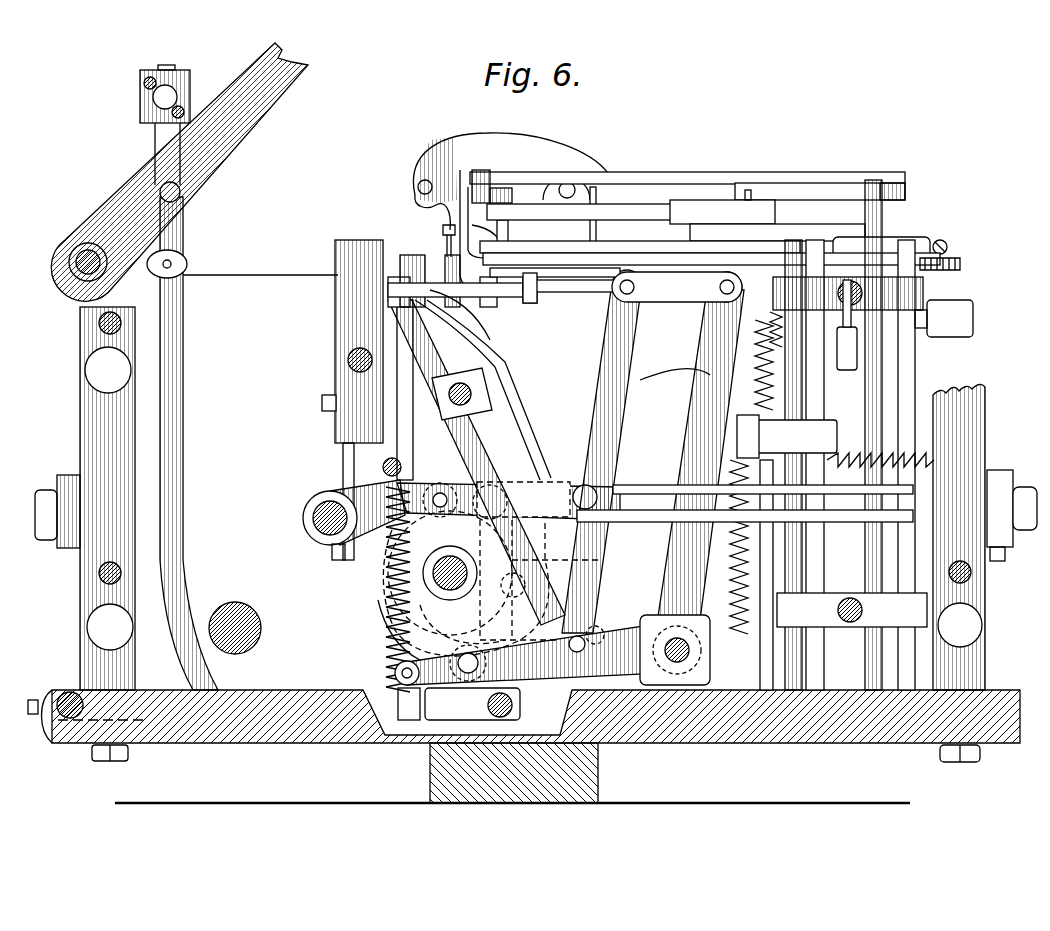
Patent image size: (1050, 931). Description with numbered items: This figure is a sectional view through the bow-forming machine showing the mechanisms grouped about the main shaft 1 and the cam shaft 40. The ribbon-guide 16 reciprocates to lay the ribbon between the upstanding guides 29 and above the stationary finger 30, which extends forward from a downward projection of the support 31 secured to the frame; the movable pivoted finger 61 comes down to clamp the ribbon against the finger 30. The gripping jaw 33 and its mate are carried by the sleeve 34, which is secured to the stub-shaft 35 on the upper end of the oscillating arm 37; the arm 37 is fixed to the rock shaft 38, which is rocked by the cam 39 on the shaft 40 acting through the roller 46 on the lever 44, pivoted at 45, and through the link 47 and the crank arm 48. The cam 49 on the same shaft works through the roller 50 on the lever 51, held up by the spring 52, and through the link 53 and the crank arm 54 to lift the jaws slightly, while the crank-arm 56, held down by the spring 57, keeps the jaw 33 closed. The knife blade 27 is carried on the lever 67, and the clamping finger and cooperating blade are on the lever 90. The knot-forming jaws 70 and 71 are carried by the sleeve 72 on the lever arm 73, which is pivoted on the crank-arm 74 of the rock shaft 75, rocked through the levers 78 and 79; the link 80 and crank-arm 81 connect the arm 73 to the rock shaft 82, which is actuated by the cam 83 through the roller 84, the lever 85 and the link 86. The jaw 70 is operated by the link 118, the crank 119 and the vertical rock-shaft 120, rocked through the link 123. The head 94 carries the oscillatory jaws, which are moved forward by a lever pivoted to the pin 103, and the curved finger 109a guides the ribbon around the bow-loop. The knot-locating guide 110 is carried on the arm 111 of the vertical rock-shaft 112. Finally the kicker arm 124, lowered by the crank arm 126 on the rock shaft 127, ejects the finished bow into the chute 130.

The main shaft 1 is at (260, 615).
The ribbon-guide 16 is at (155, 143).
The knife blade 27 is at (930, 490).
The upstanding guides 29 is at (595, 187).
The stationary finger 30 is at (469, 319).
The support 31 is at (510, 150).
The gripping jaw 33 is at (535, 280).
The sleeve 34 is at (581, 287).
The stub-shaft 35 is at (718, 296).
The oscillating arm 37 is at (700, 405).
The rock shaft 38 is at (705, 655).
The cam 39 is at (385, 612).
The shaft 40 is at (450, 560).
The lever 44 is at (470, 472).
The pivot 45 is at (325, 490).
The roller 46 is at (440, 492).
The link 47 is at (600, 593).
The crank arm 48 is at (605, 630).
The cam 49 is at (462, 624).
The roller 50 is at (530, 654).
The lever 51 is at (555, 640).
The spring 52 is at (386, 650).
The link 53 is at (600, 452).
The crank arm 54 is at (677, 287).
The crank-arm 56 is at (765, 329).
The spring 57 is at (745, 477).
The movable pivoted finger 61 is at (448, 255).
The lever 67 is at (345, 455).
The jaw 70 is at (505, 285).
The jaw 71 is at (540, 245).
The sleeve 72 is at (515, 217).
The lever arm 73 is at (628, 214).
The crank-arm 74 is at (700, 227).
The rock shaft 75 is at (675, 370).
The lever 78 is at (848, 293).
The lever 79 is at (847, 368).
The link 80 is at (800, 230).
The crank-arm 81 is at (925, 250).
The rock shaft 82 is at (915, 378).
The cam 83 is at (345, 648).
The roller 84 is at (556, 562).
The lever 85 is at (525, 680).
The link 86 is at (655, 485).
The lever 90 is at (362, 440).
The head 94 is at (410, 260).
The pin 103 is at (548, 255).
The curved finger 109a is at (530, 305).
The knot-locating guide 110 is at (422, 196).
The arm 111 is at (630, 249).
The vertical rock-shaft 112 is at (815, 425).
The link 118 is at (685, 172).
The crank 119 is at (815, 187).
The vertical rock-shaft 120 is at (890, 232).
The link 123 is at (955, 298).
The kicker arm 124 is at (248, 128).
The crank arm 126 is at (155, 690).
The rock shaft 127 is at (70, 745).
The chute 130 is at (528, 418).